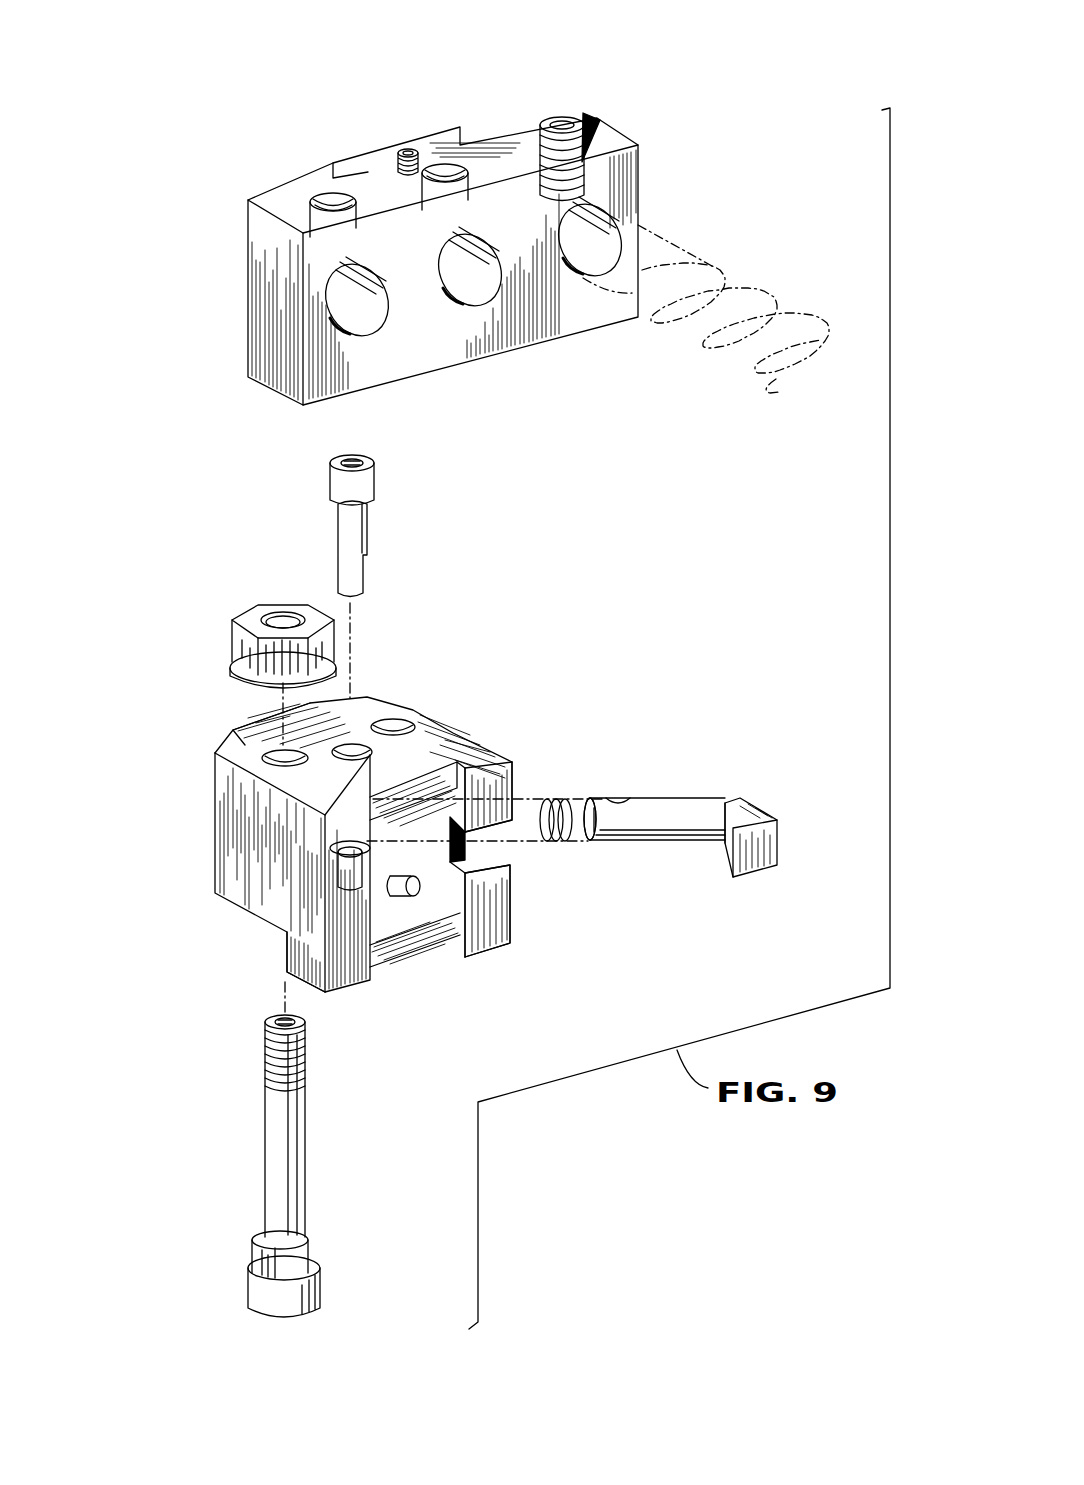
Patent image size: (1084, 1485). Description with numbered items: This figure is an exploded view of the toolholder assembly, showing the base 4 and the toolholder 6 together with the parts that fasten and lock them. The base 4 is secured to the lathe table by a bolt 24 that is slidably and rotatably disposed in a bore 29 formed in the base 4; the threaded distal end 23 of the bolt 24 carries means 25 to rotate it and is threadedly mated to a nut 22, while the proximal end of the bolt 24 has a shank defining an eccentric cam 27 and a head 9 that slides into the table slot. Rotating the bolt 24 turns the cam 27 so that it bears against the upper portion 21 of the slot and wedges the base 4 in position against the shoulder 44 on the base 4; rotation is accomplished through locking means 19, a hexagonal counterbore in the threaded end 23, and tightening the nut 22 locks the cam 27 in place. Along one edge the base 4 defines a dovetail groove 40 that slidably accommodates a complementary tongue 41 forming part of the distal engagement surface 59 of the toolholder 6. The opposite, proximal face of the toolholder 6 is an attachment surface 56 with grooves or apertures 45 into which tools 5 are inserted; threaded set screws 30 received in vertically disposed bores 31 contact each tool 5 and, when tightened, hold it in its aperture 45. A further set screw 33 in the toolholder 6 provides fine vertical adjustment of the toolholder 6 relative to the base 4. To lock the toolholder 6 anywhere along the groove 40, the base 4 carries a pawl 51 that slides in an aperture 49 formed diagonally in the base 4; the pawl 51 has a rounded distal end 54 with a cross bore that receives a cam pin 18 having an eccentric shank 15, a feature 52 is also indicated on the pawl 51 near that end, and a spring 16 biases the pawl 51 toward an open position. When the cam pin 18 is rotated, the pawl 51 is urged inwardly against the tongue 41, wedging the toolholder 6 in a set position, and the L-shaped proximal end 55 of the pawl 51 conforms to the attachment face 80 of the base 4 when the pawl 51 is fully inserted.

The base 4 is at (352, 845).
The tools 5 is at (718, 262).
The toolholder 6 is at (414, 222).
The bolt head 9 is at (320, 1292).
The eccentric shank 15 is at (368, 540).
The spring 16 is at (555, 800).
The cam pin 18 is at (399, 509).
The locking means 19 is at (362, 462).
The upper portion of groove 21 is at (340, 748).
The nuts 22 is at (334, 648).
The threaded distal end 23 is at (305, 1067).
The bolt 24 is at (280, 1152).
The means to rotate bolt 25 is at (277, 1020).
The eccentric cam 27 is at (258, 1250).
The bore 29 is at (395, 720).
The set screw 30 is at (583, 122).
The vertically disposed bore 31 is at (313, 197).
The set screw 33 is at (413, 150).
The dovetail groove 40 is at (445, 953).
The tongue 41 is at (302, 125).
The shoulder 44 is at (285, 956).
The grooves or apertures 45 is at (470, 295).
The aperture 49 is at (460, 800).
The pawl 51 is at (672, 825).
The groove 52 is at (625, 798).
The rounded distal end 54 is at (595, 840).
The proximal end 55 is at (722, 853).
The attachment surface 56 is at (613, 361).
The engagement surface 59 is at (388, 78).
The attachment face 80 is at (490, 937).